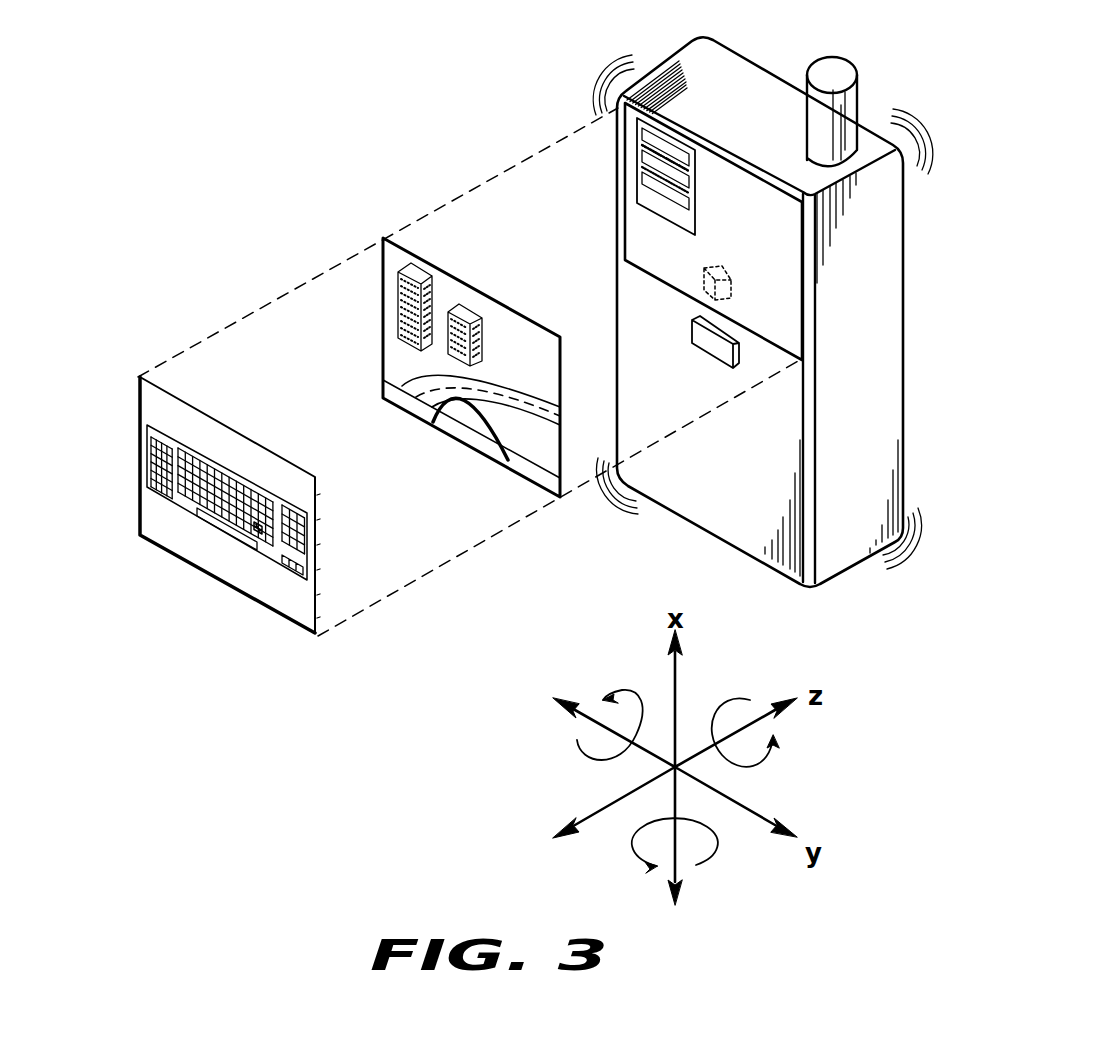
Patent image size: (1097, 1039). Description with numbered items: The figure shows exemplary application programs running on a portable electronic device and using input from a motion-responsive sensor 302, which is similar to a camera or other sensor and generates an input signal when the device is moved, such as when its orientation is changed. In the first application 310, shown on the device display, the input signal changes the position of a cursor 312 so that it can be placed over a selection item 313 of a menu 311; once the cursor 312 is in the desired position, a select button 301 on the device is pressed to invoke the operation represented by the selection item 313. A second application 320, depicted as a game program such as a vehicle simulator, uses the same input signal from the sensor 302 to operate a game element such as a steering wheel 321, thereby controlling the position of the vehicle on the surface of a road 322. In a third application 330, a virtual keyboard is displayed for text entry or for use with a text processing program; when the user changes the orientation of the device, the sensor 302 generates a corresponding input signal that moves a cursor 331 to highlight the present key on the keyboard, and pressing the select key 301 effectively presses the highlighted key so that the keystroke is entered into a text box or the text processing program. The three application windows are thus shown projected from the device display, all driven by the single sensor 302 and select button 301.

The select button 301 is at (712, 367).
The sensor 302 is at (702, 290).
The application 310 is at (625, 243).
The menu 311 is at (695, 168).
The cursor 312 is at (700, 215).
The selection item 313 is at (636, 164).
The application 320 is at (383, 318).
The steering wheel 321 is at (505, 448).
The road 322 is at (525, 384).
The application 330 is at (140, 515).
The cursor 331 is at (262, 538).